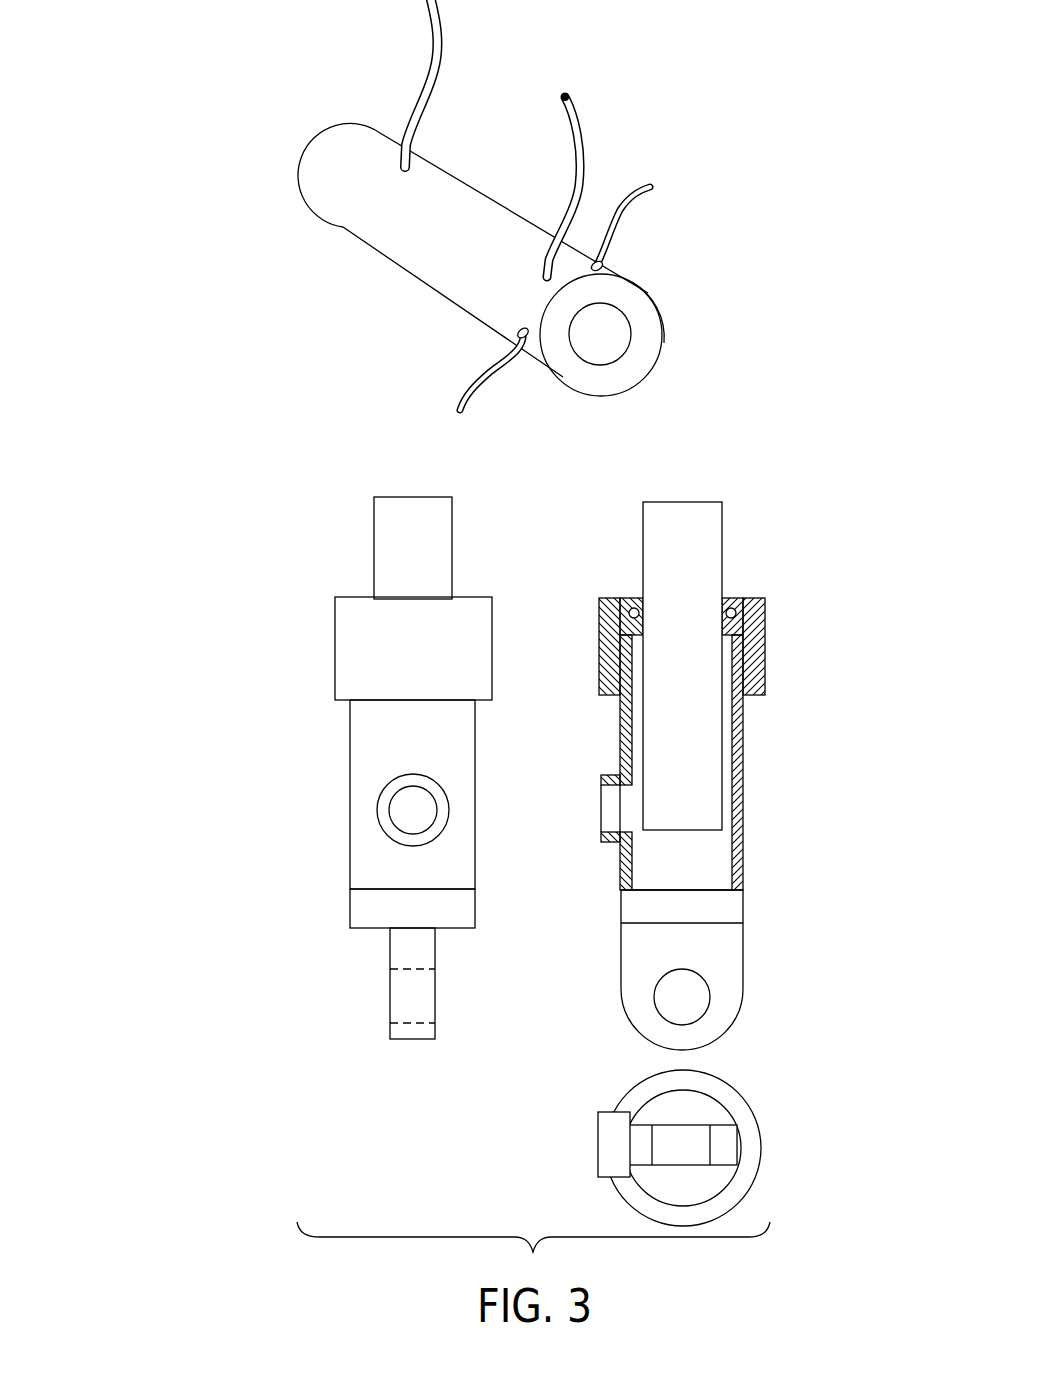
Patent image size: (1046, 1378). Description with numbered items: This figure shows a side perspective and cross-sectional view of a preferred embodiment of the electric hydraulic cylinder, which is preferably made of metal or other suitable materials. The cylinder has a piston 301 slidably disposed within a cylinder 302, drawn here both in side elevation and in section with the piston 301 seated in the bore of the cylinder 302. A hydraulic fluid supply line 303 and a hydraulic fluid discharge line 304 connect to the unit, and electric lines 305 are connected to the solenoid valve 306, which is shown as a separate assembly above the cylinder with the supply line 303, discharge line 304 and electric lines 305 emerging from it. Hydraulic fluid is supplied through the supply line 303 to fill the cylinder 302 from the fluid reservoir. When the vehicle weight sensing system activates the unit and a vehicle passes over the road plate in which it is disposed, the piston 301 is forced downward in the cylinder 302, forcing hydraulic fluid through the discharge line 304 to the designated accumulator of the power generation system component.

The piston 301 is at (727, 538).
The cylinder 302 is at (760, 850).
The hydraulic fluid supply line 303 is at (422, 55).
The hydraulic fluid discharge line 304 is at (583, 107).
The electric lines 305 is at (500, 388).
The solenoid valve 306 is at (577, 317).